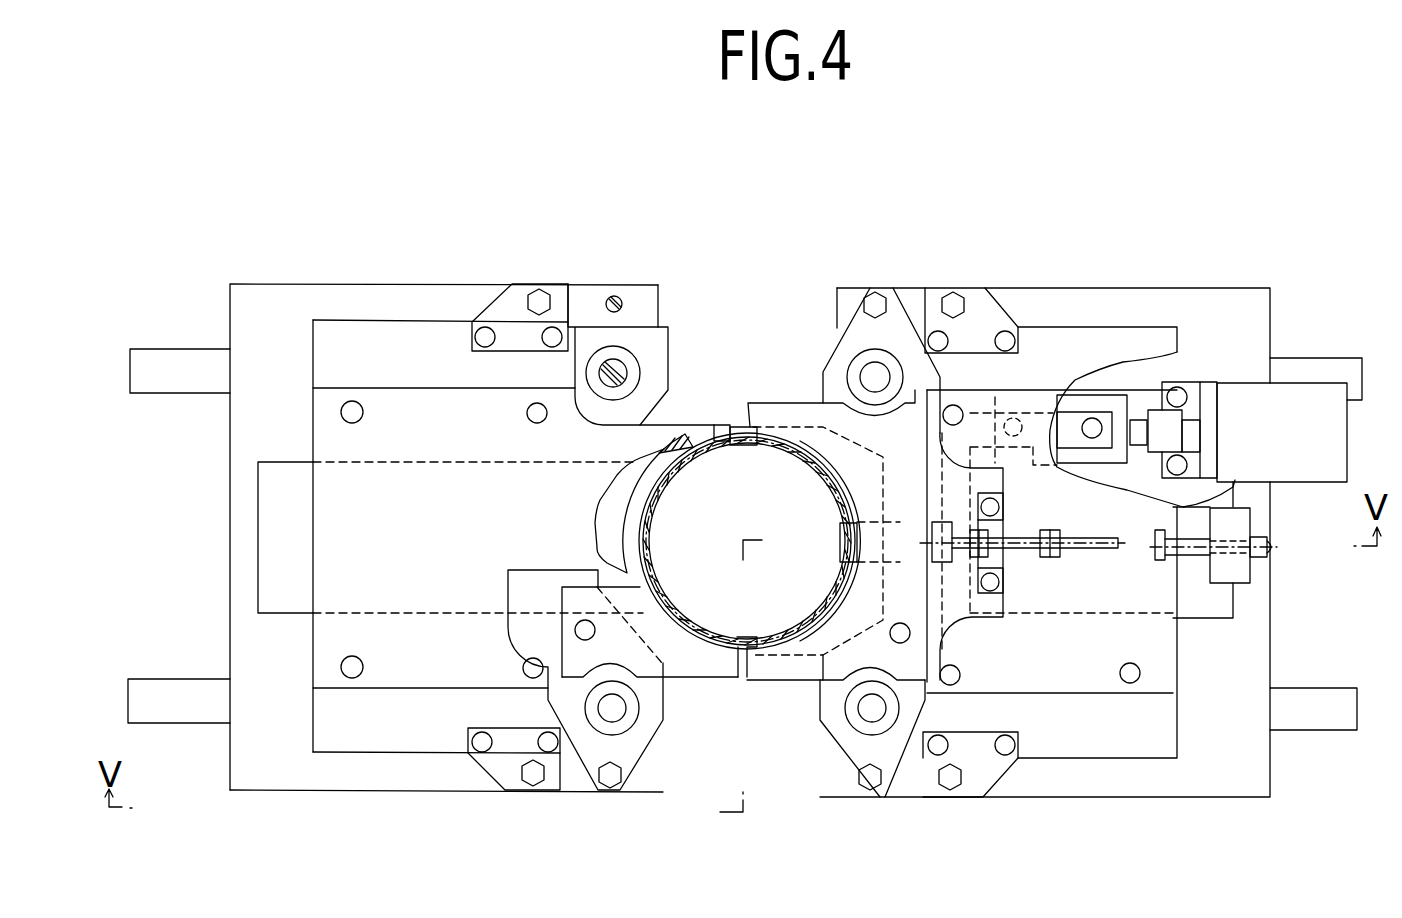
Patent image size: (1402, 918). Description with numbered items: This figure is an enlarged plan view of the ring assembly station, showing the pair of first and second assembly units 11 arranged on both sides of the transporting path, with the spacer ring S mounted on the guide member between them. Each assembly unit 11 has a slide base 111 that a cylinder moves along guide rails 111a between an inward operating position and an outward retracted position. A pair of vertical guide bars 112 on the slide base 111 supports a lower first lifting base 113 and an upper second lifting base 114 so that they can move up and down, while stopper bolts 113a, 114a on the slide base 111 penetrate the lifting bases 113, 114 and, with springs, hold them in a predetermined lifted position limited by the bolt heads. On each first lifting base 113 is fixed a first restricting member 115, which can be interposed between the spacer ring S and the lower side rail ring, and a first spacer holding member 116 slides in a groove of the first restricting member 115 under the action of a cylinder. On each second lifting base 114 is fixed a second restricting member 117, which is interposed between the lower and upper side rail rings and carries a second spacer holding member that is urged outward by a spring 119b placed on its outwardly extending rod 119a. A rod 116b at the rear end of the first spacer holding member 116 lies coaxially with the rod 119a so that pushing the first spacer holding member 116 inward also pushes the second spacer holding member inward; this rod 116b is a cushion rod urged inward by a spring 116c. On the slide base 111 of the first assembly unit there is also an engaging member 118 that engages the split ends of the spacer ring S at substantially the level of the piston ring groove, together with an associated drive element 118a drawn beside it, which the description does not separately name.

The assembly unit 11 is at (1100, 220).
The slide base 111 is at (368, 777).
The guide rails 111a is at (158, 362).
The guide bars 112 is at (630, 370).
The first lifting base 113 is at (447, 322).
The stopper bolt 113a is at (540, 300).
The second lifting base 114 is at (853, 333).
The stopper bolt 114a is at (616, 300).
The first restricting member 115 is at (670, 433).
The first spacer holding member 116 is at (613, 515).
The rod 116b is at (1160, 537).
The spring 116c is at (1192, 560).
The second restricting member 117 is at (768, 675).
The engaging member 118 is at (955, 628).
The motor 118a is at (1252, 403).
The rod 119a is at (1080, 547).
The spring 119b is at (1028, 535).
The spacer ring S is at (717, 437).